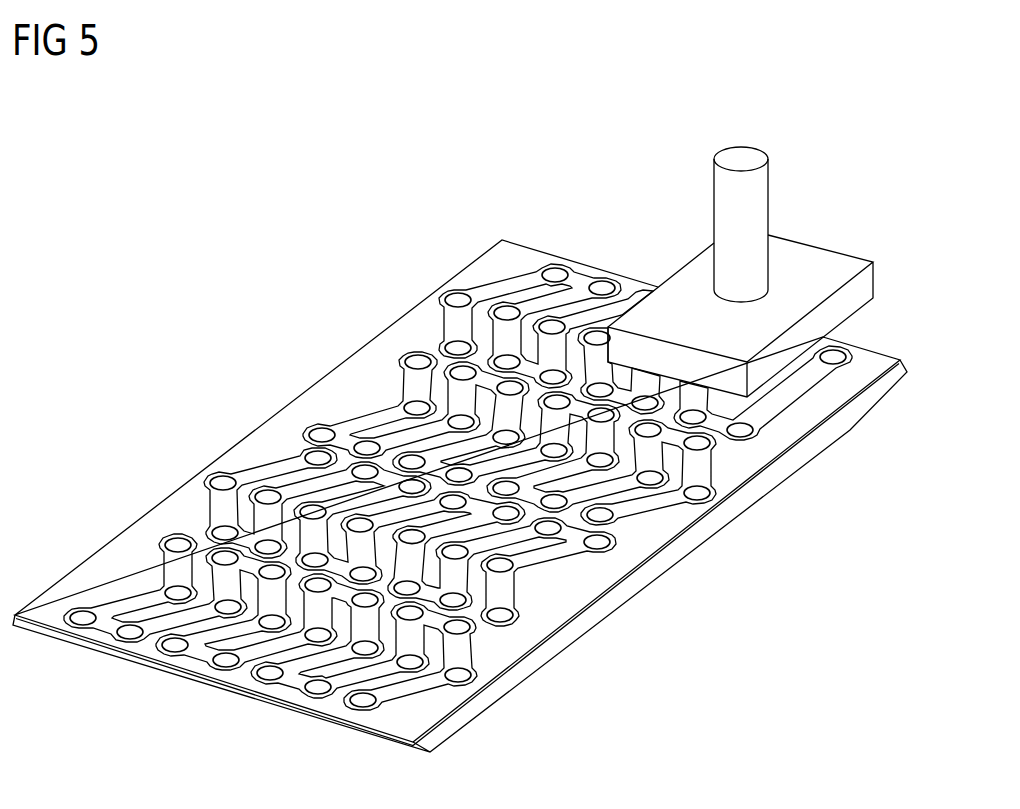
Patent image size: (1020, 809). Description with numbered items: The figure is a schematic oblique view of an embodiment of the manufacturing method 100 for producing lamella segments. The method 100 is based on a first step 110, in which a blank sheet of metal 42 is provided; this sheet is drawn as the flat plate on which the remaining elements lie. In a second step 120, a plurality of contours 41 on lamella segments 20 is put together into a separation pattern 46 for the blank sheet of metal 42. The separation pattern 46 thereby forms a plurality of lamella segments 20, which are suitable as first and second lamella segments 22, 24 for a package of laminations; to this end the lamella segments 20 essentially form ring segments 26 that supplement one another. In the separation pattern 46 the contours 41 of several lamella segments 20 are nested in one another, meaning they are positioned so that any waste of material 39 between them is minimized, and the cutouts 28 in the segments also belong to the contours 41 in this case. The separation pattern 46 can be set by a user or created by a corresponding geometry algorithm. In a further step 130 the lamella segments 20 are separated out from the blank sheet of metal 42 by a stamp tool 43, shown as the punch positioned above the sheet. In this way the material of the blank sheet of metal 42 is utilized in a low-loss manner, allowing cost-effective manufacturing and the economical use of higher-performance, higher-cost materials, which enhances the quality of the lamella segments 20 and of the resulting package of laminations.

The manufacturing method 100 is at (244, 262).
The lamella segments 20 is at (514, 262).
The first lamella segment 22 is at (458, 448).
The second lamella segment 24 is at (458, 448).
The ring segments 26 is at (458, 448).
The cutouts 28 is at (453, 335).
The waste of material 39 is at (585, 300).
The contours 41 is at (648, 285).
The blank sheet of metal 42 is at (457, 493).
The first step 110 is at (95, 572).
The stamp tool 43 is at (745, 186).
The further step 130 is at (738, 153).
The separation pattern 46 is at (460, 493).
The second step 120 is at (668, 572).